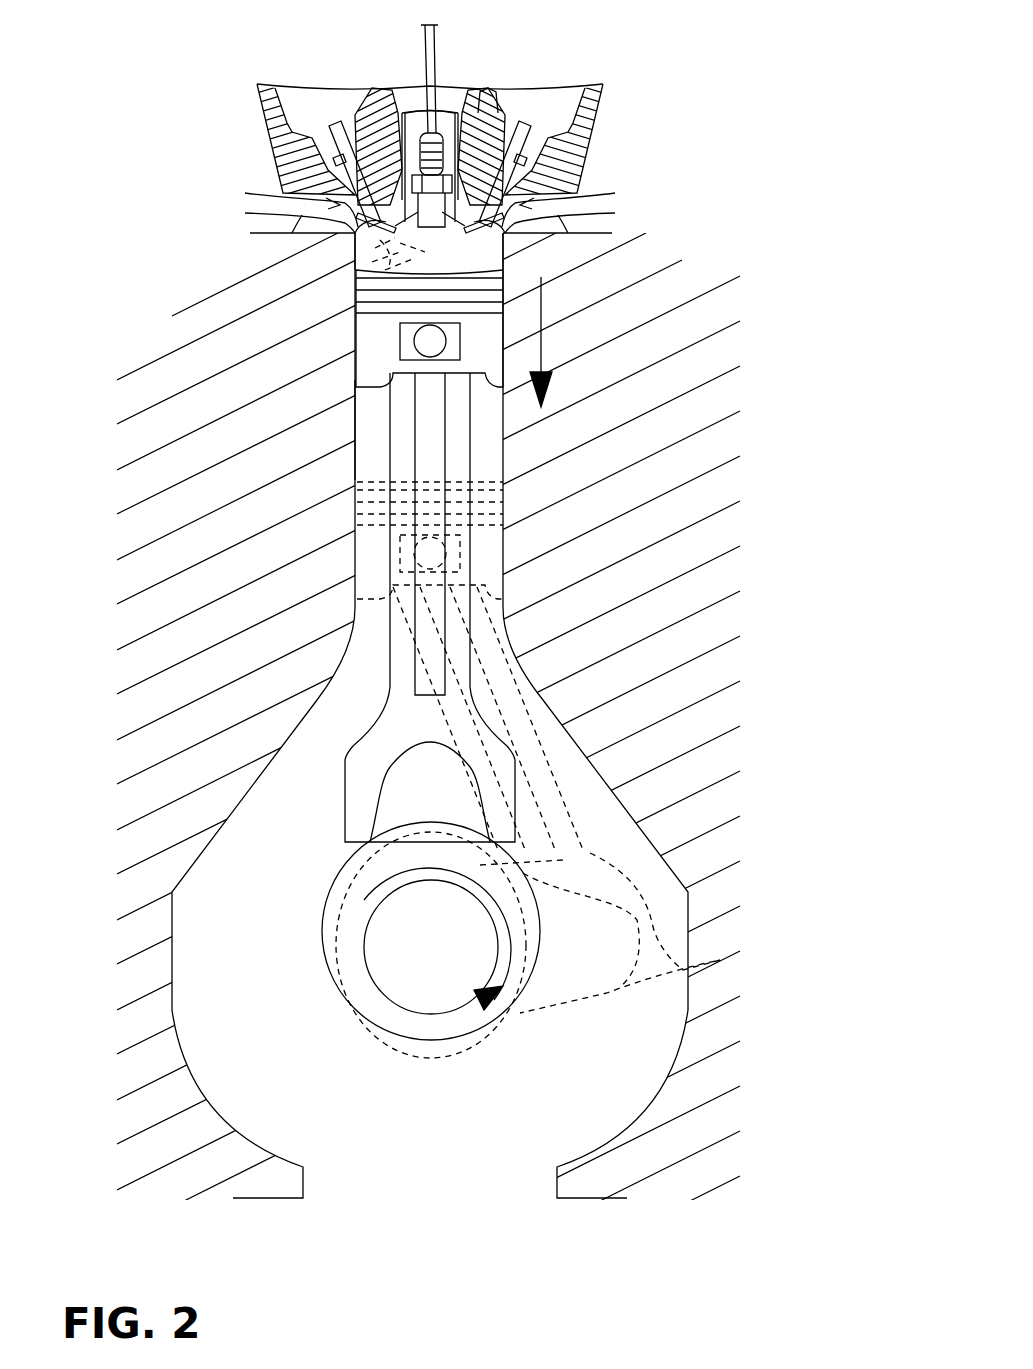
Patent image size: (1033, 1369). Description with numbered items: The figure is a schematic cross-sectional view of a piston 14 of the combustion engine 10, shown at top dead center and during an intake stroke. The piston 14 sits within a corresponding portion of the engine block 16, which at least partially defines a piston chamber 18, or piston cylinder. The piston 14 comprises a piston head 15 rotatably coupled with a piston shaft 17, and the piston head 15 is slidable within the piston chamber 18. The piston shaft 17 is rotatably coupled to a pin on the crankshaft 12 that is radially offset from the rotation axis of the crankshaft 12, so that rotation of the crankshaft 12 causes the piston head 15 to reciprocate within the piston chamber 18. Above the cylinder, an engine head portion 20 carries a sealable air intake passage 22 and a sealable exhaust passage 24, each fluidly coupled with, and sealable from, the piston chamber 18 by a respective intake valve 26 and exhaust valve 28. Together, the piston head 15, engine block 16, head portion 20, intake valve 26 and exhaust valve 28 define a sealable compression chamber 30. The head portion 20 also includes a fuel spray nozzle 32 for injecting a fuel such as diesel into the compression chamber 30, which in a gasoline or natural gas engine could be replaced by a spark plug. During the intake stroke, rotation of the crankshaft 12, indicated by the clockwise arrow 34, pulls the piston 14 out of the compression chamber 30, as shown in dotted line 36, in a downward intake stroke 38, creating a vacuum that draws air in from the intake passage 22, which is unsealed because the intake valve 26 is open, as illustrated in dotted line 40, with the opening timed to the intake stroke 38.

The combustion engine 10 is at (158, 23).
The crankshaft 12 is at (437, 993).
The piston 14 is at (475, 420).
The piston head 15 is at (473, 330).
The engine block 16 is at (613, 363).
The piston shaft 17 is at (460, 455).
The piston chamber 18 is at (380, 424).
The engine head portion 20 is at (472, 110).
The sealable air intake passage 22 is at (338, 198).
The sealable exhaust passage 24 is at (522, 198).
The intake valve 26 is at (300, 202).
The exhaust valve 28 is at (560, 202).
The compression chamber 30 is at (436, 246).
The fuel spray nozzle 32 is at (405, 130).
The clockwise arrow 34 is at (518, 940).
The dotted line 36 is at (590, 853).
The intake stroke 38 is at (545, 340).
The dotted line 40 is at (375, 255).